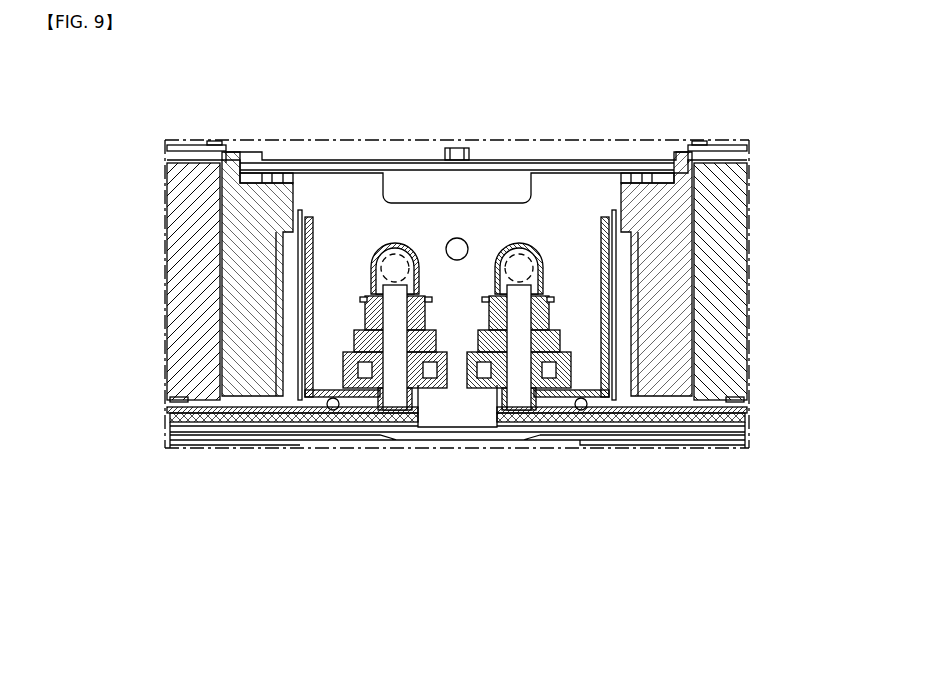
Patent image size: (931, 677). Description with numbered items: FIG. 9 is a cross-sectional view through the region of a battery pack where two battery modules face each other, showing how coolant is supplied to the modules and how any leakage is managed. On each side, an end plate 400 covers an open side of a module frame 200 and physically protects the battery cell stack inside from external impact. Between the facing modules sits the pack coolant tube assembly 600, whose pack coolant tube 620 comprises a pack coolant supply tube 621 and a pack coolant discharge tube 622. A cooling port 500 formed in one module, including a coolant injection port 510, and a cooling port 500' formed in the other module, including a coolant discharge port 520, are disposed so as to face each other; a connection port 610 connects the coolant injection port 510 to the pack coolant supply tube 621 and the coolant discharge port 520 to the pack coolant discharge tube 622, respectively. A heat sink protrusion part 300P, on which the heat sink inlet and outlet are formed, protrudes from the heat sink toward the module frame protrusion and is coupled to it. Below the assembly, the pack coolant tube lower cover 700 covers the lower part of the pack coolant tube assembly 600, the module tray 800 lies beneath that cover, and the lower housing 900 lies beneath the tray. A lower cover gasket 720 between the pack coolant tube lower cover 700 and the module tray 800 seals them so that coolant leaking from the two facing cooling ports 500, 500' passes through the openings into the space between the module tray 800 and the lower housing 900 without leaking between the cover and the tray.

The module frame 200 is at (222, 282).
The end plate 400 is at (237, 212).
The pack coolant tube assembly 600 is at (543, 325).
The connection port 610 is at (572, 352).
The pack coolant tube 620 is at (456, 178).
The pack coolant supply tube 621 is at (381, 255).
The pack coolant discharge tube 622 is at (533, 255).
The cooling port 500 is at (395, 394).
The coolant injection port 510 is at (397, 402).
The cooling port 500' is at (513, 436).
The coolant discharge port 520 is at (517, 395).
The pack coolant tube lower cover 700 is at (318, 393).
The lower cover gasket 720 is at (333, 411).
The module tray 800 is at (680, 413).
The heat sink protrusion part 300P is at (540, 422).
The lower housing 900 is at (633, 433).